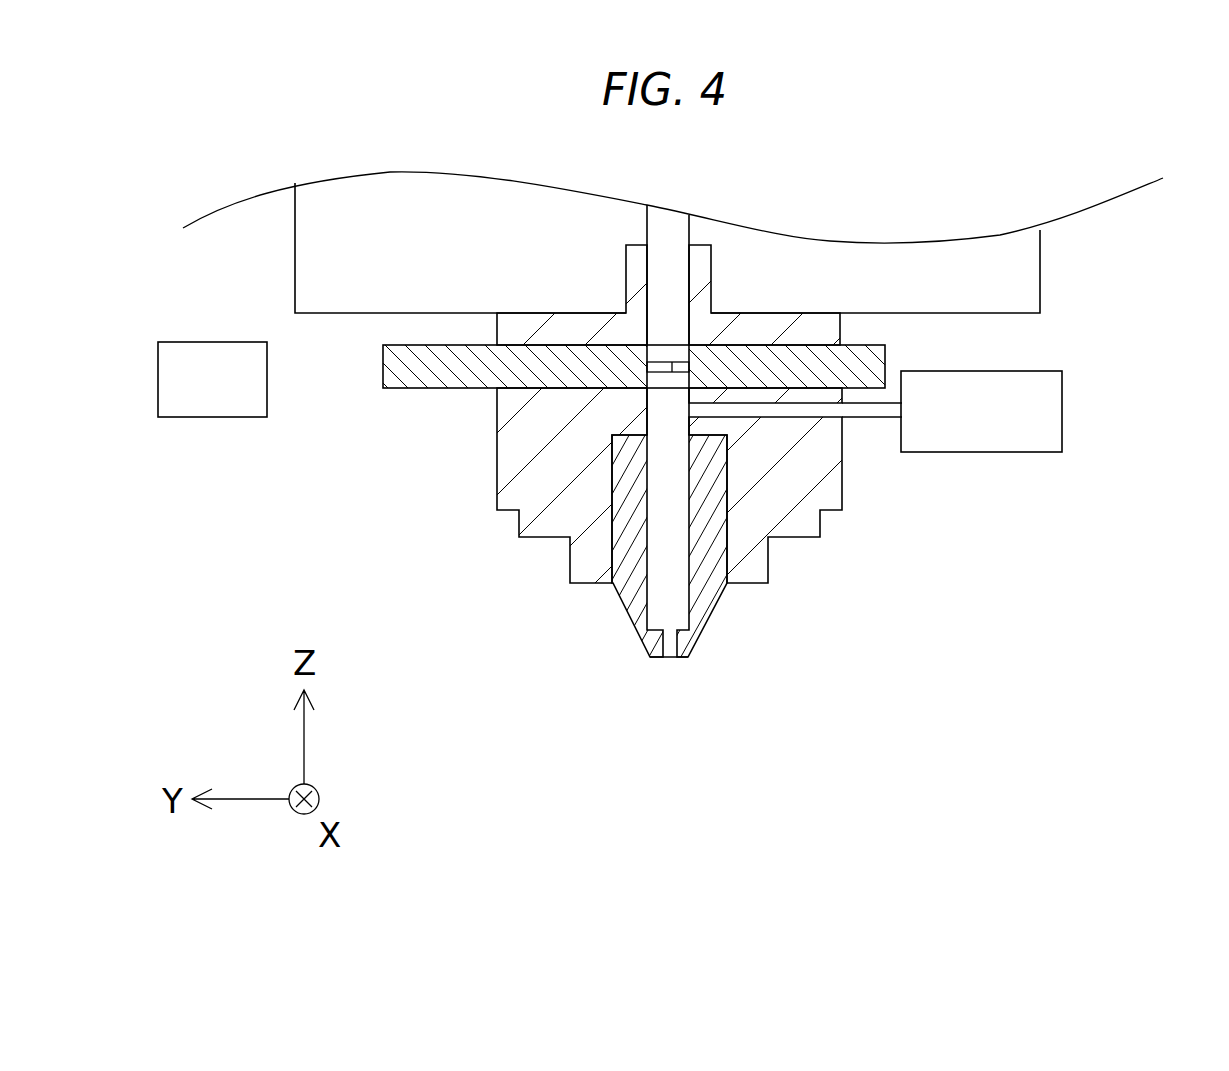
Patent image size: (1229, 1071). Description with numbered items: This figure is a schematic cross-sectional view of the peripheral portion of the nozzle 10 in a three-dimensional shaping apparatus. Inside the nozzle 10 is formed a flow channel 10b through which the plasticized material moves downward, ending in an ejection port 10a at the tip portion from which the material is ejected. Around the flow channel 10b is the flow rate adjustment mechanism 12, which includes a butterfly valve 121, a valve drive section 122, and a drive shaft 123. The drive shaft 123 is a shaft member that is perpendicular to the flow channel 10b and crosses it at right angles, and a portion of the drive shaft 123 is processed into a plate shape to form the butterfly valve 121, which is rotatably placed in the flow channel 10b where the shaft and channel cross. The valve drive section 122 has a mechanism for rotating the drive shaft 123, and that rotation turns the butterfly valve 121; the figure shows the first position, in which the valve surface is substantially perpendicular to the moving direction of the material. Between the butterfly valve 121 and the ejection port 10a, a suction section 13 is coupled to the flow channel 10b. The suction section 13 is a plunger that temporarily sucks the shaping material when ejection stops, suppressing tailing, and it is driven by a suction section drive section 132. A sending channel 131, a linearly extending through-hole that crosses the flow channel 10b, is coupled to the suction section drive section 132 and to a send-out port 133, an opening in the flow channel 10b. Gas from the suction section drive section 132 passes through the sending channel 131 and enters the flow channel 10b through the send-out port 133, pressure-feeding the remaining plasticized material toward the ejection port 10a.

The nozzle 10 is at (614, 415).
The ejection port 10a is at (670, 657).
The flow channel 10b is at (667, 233).
The flow rate adjustment mechanism 12 is at (254, 307).
The butterfly valve 121 is at (662, 362).
The valve drive section 122 is at (227, 417).
The drive shaft 123 is at (448, 388).
The suction section 13 is at (1013, 460).
The sending channel 131 is at (813, 418).
The suction section drive section 132 is at (977, 453).
The send-out port 133 is at (690, 417).